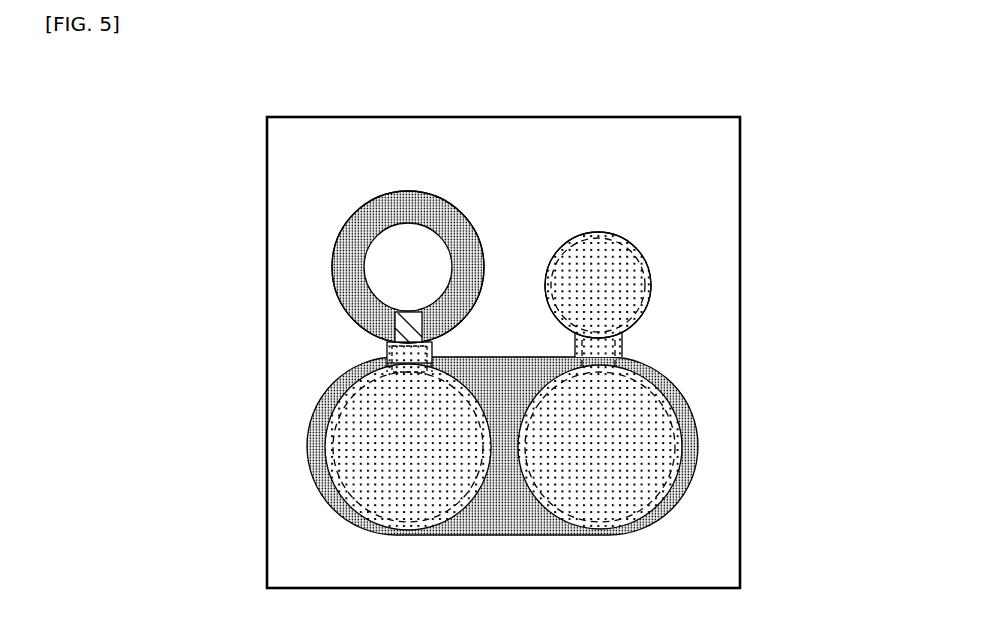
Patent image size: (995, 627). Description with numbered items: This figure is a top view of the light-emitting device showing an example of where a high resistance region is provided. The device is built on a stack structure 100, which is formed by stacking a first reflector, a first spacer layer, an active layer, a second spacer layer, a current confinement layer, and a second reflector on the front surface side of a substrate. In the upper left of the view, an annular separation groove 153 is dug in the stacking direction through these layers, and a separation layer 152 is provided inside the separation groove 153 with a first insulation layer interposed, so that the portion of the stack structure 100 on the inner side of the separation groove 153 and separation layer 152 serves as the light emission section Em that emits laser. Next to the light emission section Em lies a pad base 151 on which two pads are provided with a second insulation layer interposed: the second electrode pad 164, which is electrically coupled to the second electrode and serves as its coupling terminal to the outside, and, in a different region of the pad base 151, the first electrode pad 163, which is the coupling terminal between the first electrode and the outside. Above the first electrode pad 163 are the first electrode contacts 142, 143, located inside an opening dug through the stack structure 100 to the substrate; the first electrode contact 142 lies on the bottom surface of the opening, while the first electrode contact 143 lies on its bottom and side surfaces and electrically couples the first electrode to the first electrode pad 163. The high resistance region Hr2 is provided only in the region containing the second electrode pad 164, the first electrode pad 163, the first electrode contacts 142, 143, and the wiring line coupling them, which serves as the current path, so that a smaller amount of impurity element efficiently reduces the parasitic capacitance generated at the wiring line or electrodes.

The stack structure 100 is at (740, 170).
The pad base 151 is at (680, 385).
The separation layer 152 is at (357, 283).
The separation groove 153 is at (375, 195).
The first electrode contact 142 is at (706, 285).
The first electrode contact 143 is at (640, 282).
The first electrode pad 163 is at (638, 443).
The second electrode pad 164 is at (370, 443).
The light emission section Em is at (433, 263).
The high resistance region Hr2 is at (621, 238).